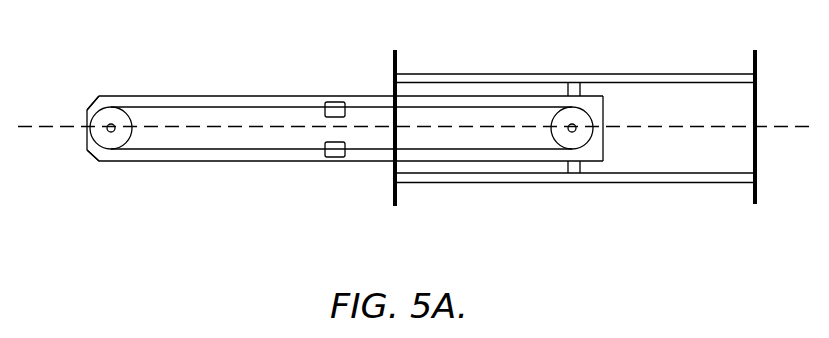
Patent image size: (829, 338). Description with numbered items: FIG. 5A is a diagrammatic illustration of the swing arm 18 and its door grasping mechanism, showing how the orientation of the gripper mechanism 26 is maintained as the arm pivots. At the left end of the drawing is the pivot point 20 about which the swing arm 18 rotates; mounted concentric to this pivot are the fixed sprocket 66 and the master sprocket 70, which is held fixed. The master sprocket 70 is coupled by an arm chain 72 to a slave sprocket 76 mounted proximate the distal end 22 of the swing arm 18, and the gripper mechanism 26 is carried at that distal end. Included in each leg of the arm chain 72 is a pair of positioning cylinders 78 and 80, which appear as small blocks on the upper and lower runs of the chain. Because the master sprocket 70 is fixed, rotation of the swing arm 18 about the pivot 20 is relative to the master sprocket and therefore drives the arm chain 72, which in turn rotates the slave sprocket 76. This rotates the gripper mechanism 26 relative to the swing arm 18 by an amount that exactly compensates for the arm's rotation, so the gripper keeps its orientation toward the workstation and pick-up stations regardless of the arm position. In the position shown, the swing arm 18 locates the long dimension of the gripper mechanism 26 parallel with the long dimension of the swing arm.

The swing arm 18 is at (214, 93).
The pivot point 20 is at (111, 124).
The distal end 22 is at (603, 107).
The gripper mechanism 26 is at (565, 71).
The fixed sprocket 66 is at (97, 152).
The master sprocket 70 is at (90, 165).
The arm chain 72 is at (242, 150).
The slave sprocket 76 is at (601, 152).
The positioning cylinders 78 is at (333, 102).
The positioning cylinders 80 is at (330, 158).